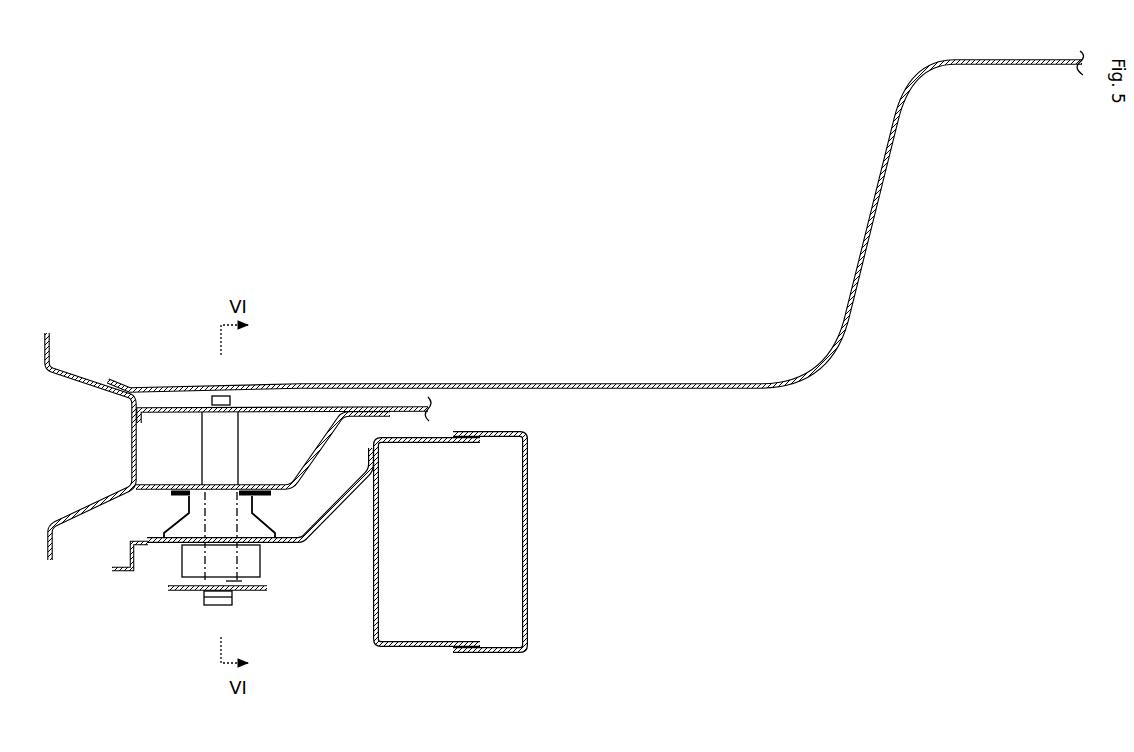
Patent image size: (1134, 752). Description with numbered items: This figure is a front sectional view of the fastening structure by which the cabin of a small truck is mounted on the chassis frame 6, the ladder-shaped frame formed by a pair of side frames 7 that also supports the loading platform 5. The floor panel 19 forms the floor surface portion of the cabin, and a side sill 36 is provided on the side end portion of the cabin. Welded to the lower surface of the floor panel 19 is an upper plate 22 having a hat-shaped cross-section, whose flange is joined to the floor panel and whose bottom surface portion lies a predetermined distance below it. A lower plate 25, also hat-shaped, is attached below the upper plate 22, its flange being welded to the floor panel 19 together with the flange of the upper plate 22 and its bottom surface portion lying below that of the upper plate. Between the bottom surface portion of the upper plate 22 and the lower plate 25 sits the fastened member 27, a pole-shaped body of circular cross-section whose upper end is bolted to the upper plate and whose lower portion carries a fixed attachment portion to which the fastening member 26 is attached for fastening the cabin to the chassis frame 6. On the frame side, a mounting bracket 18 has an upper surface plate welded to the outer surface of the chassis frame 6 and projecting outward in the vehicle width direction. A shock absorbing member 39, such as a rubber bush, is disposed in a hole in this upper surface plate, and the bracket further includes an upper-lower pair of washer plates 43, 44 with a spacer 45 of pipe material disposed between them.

The loading platform 5 is at (846, 393).
The chassis frame 6 is at (476, 555).
The side frame 7 is at (373, 610).
The mounting bracket 18 is at (122, 552).
The floor panel 19 is at (646, 384).
The upper plate 22 is at (293, 402).
The lower plate 25 is at (320, 444).
The fastening member 26 is at (212, 605).
The fastened member 27 is at (208, 446).
The side sill 36 is at (78, 380).
The shock absorbing member 39 is at (185, 523).
The upper washer plate 43 is at (252, 503).
The lower washer plate 44 is at (175, 592).
The spacer 45 is at (230, 582).